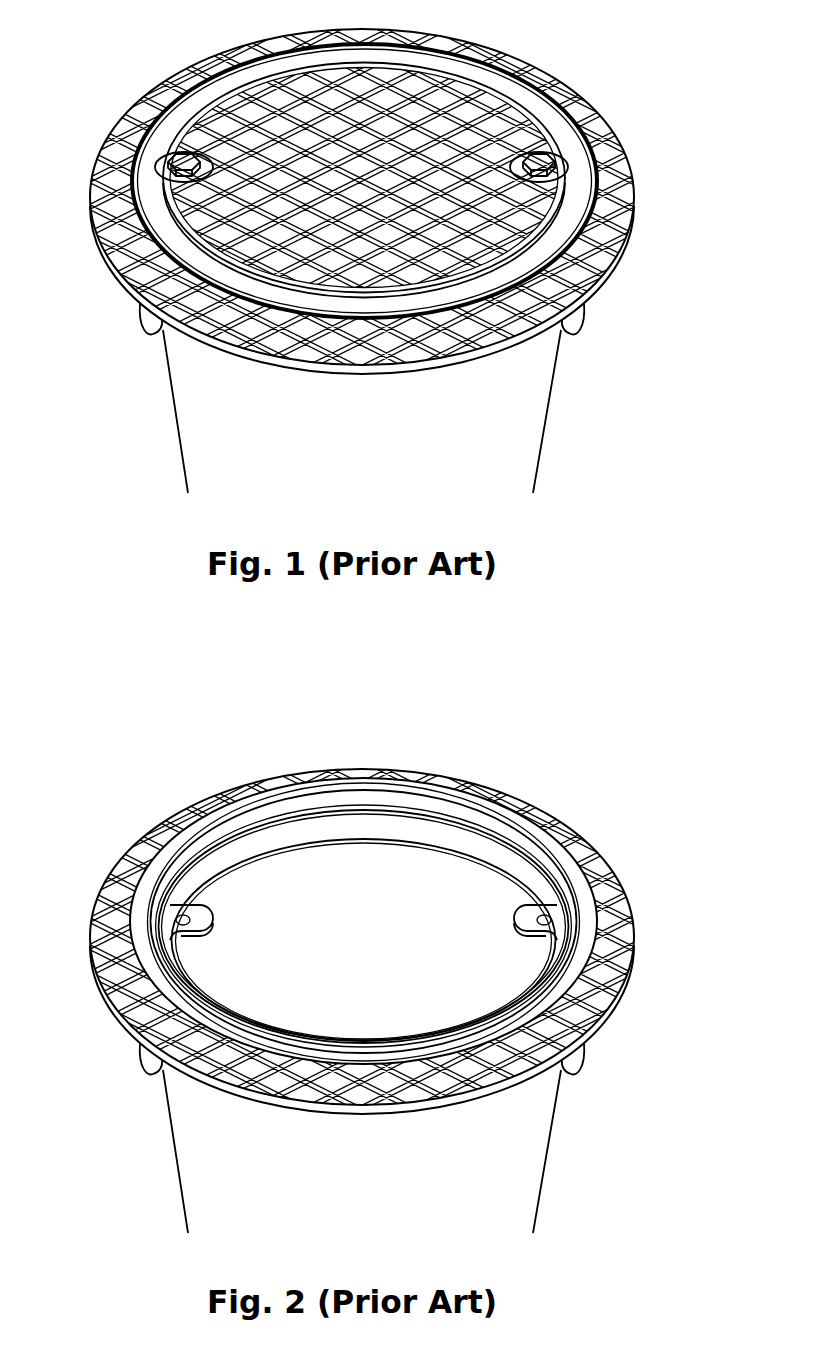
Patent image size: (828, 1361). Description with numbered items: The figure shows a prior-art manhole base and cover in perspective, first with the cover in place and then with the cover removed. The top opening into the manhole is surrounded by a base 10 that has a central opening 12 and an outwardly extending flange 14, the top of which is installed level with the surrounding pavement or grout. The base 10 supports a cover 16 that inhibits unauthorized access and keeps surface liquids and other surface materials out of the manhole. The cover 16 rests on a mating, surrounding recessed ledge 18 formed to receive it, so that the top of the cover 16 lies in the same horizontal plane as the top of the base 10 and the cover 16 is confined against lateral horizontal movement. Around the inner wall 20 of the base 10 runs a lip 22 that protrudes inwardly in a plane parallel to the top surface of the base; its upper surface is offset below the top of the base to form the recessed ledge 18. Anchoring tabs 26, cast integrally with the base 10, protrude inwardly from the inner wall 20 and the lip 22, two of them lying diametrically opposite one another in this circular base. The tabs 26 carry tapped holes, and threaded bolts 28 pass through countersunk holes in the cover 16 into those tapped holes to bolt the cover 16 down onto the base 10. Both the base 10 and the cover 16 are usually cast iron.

In FIG. 1, the base 10 is at (421, 318).
In FIG. 2, the base 10 is at (392, 1018).
In FIG. 2, the central opening 12 is at (379, 900).
In FIG. 1, the outwardly extending flange 14 is at (360, 323).
In FIG. 2, the outwardly extending flange 14 is at (360, 935).
In FIG. 1, the cover 16 is at (360, 323).
In FIG. 2, the recessed ledge 18 is at (364, 889).
In FIG. 2, the inner wall 20 is at (339, 916).
In FIG. 2, the lip 22 is at (364, 902).
In FIG. 2, the anchoring tabs 26 is at (361, 904).
In FIG. 1, the threaded bolts 28 is at (359, 126).